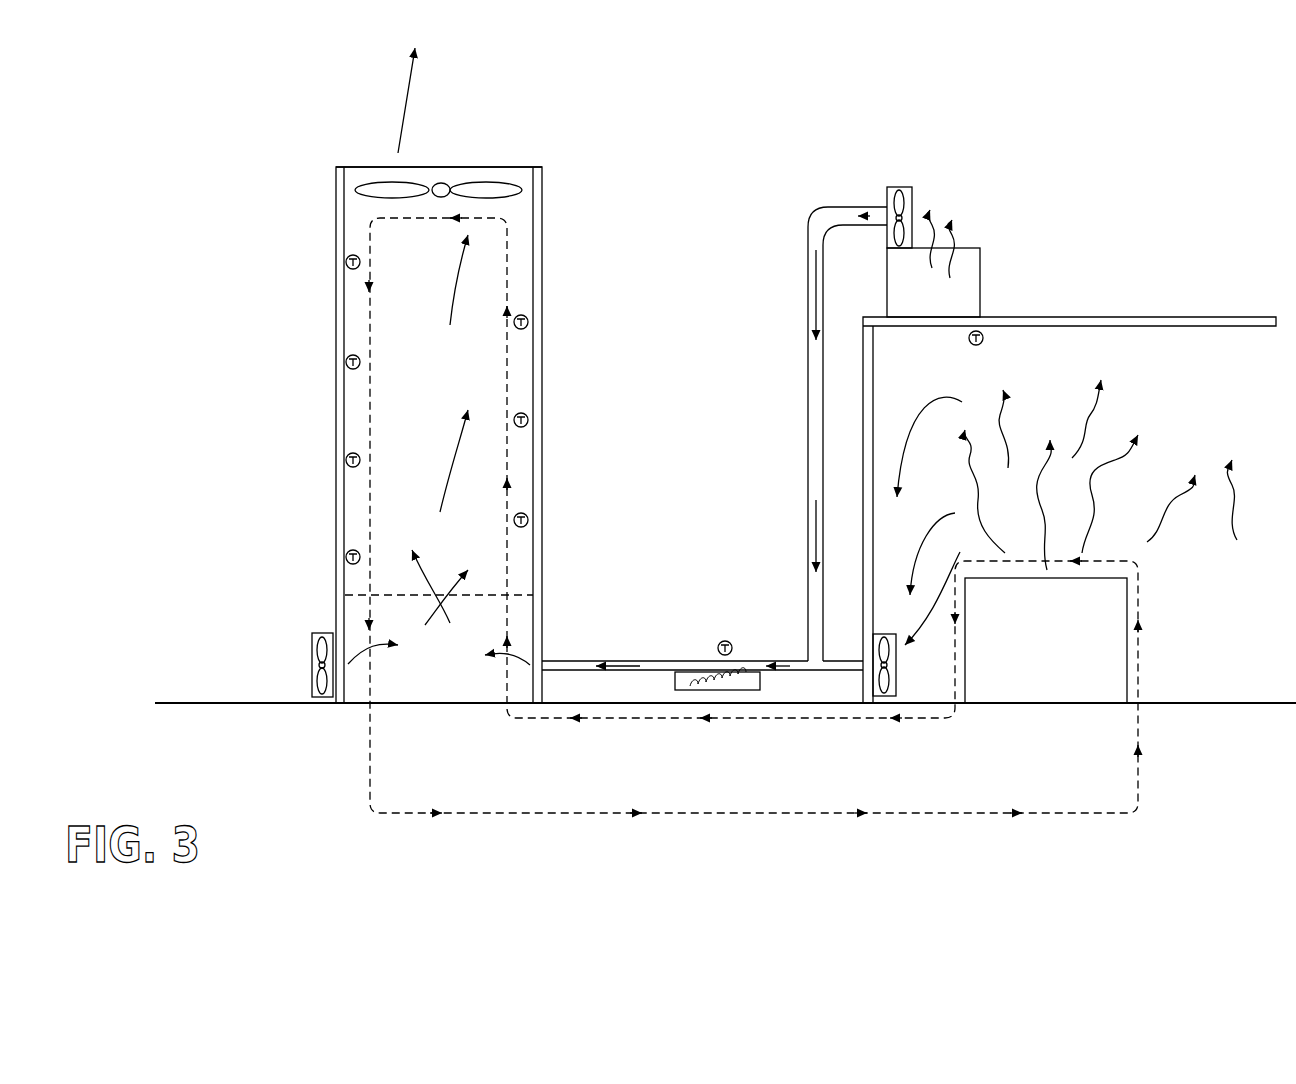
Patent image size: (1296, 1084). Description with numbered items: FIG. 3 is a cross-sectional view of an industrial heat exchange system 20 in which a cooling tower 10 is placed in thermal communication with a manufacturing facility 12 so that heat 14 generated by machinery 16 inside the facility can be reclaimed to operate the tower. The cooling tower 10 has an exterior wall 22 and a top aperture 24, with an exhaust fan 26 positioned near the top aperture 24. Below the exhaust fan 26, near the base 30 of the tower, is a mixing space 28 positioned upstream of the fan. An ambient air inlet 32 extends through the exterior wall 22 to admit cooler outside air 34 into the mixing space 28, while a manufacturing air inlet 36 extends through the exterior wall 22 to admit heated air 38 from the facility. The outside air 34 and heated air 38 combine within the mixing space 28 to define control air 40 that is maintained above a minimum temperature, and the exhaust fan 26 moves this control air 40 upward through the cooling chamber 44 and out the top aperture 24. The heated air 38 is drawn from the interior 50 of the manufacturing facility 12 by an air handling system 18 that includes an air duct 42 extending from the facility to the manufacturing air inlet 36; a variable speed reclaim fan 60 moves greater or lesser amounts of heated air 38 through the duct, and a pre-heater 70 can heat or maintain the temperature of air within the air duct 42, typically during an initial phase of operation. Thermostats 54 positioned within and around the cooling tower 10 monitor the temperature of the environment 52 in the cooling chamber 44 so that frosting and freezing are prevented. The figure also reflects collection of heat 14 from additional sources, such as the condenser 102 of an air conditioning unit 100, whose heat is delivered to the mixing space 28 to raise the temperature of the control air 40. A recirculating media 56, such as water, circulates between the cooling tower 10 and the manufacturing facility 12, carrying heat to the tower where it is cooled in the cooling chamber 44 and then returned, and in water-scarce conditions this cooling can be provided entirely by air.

The cooling tower 10 is at (282, 360).
The manufacturing facility 12 is at (1210, 300).
The heat 14 is at (928, 232).
The machinery 16 is at (1042, 675).
The air handling system 18 is at (632, 682).
The industrial heat exchange system 20 is at (576, 414).
The exterior wall 22 is at (336, 508).
The top aperture 24 is at (525, 167).
The exhaust fan 26 is at (463, 183).
The mixing space 28 is at (372, 612).
The base 30 is at (342, 706).
The ambient air inlet 32 is at (348, 680).
The outside air 34 is at (302, 663).
The manufacturing air inlet 36 is at (527, 672).
The heated air 38 is at (812, 312).
The control air 40 is at (463, 440).
The air duct 42 is at (757, 660).
The cooling chamber 44 is at (458, 383).
The interior 50 is at (1250, 632).
The environment 52 is at (498, 258).
The thermostat 54 is at (528, 523).
The recirculating media 56 is at (510, 300).
The variable speed reclaim fan 60 is at (895, 683).
The pre-heater 70 is at (708, 692).
The air conditioning unit 100 is at (985, 298).
The condenser 102 is at (968, 248).